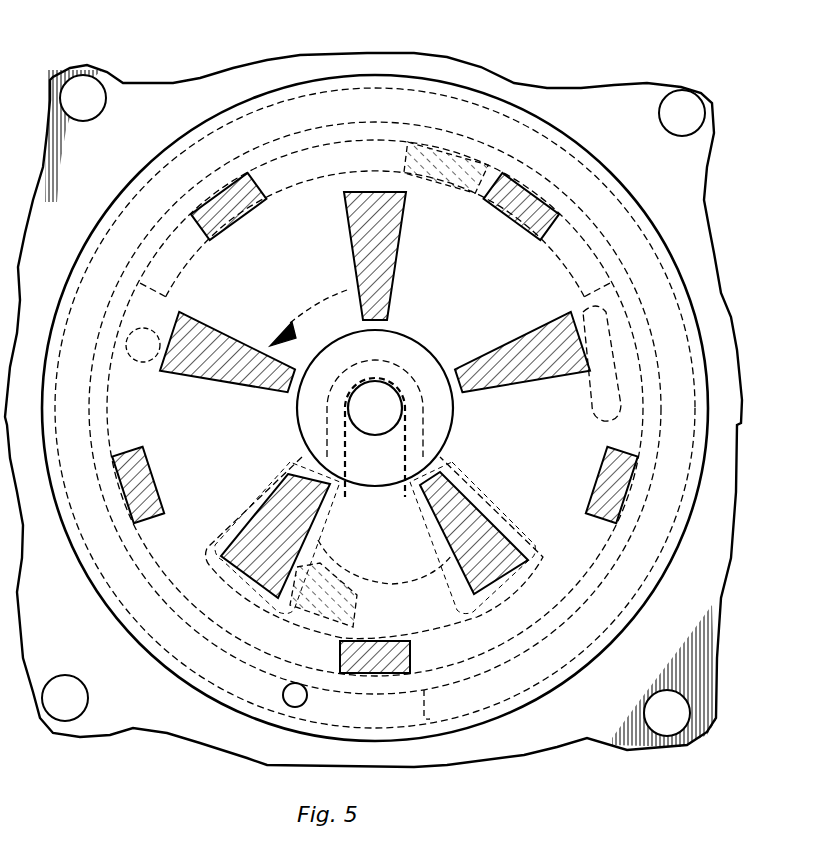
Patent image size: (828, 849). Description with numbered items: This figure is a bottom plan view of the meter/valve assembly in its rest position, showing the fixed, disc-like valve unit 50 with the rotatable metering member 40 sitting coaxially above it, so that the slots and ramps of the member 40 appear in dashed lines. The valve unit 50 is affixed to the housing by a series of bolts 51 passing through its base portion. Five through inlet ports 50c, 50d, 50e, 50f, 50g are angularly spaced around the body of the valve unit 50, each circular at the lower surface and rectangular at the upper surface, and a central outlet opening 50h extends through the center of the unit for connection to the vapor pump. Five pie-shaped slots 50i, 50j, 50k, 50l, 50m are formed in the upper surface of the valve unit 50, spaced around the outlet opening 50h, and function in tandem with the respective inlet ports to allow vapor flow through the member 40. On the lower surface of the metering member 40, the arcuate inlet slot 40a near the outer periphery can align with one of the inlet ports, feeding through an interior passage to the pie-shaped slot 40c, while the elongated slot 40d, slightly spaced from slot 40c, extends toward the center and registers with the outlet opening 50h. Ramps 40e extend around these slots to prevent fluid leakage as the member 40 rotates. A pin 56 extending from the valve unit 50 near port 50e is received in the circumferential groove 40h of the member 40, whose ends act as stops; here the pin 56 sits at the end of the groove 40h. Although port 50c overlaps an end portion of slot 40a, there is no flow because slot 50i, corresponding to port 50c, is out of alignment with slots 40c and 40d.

The metering member 40 is at (578, 145).
The inlet slot 40a is at (313, 193).
The pie-shaped slot 40c is at (340, 613).
The elongated slot 40d is at (374, 548).
The ramps 40e is at (387, 585).
The circumferential groove 40h is at (683, 337).
The valve unit 50 is at (722, 247).
The inlet port 50c is at (233, 217).
The inlet port 50d is at (150, 468).
The inlet port 50e is at (413, 653).
The inlet port 50f is at (587, 497).
The inlet port 50g is at (500, 232).
The outlet opening 50h is at (402, 400).
The pie-shaped slot 50i is at (472, 496).
The pie-shaped slot 50j is at (521, 373).
The pie-shaped slot 50k is at (392, 292).
The pie-shaped slot 50l is at (217, 333).
The pie-shaped slot 50m is at (260, 522).
The bolts 51 is at (682, 136).
The pin 56 is at (152, 330).